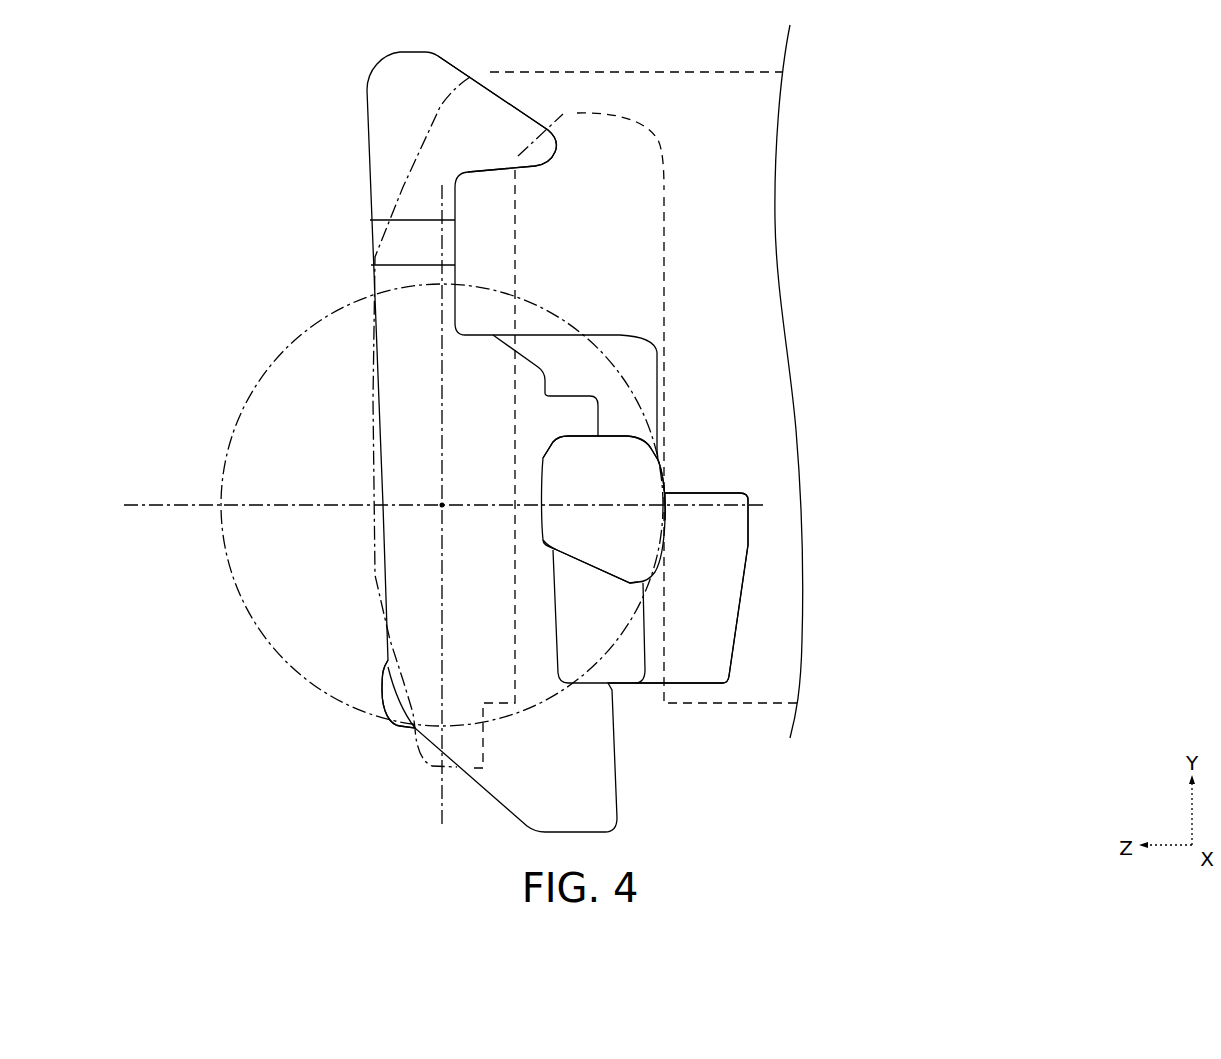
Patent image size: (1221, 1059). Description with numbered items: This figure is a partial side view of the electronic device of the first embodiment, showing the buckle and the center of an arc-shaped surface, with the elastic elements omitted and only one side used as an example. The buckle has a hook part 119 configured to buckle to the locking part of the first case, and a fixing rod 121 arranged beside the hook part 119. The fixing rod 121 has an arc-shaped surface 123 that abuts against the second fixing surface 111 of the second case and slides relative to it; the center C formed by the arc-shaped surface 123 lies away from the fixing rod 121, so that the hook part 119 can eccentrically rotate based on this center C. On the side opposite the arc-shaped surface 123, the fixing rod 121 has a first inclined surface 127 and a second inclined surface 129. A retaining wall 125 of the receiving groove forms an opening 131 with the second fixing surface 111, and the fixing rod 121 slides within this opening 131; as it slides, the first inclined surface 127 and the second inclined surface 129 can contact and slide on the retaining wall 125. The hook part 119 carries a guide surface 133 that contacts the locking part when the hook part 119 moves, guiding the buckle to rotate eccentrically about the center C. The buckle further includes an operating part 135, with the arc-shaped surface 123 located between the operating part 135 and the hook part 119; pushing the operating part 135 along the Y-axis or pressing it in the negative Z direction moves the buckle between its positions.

The second fixing surface 111 is at (666, 278).
The hook part 119 is at (392, 73).
The fixing rod 121 is at (542, 523).
The arc-shaped surface 123 is at (663, 539).
The retaining wall 125 is at (518, 233).
The first inclined surface 127 is at (618, 565).
The second inclined surface 129 is at (550, 474).
The opening 131 is at (624, 192).
The guide surface 133 is at (497, 98).
The operating part 135 is at (383, 700).
The center of the arc-shaped surface C is at (442, 505).